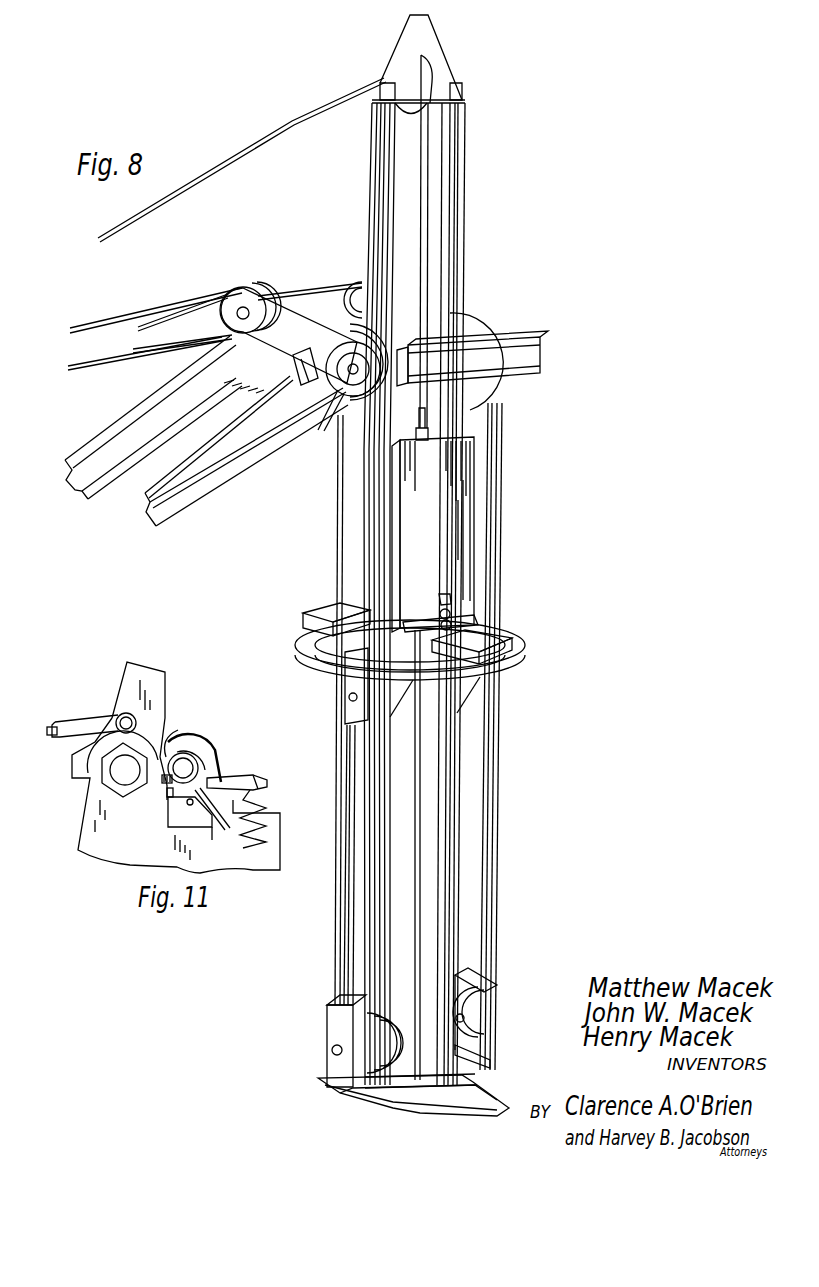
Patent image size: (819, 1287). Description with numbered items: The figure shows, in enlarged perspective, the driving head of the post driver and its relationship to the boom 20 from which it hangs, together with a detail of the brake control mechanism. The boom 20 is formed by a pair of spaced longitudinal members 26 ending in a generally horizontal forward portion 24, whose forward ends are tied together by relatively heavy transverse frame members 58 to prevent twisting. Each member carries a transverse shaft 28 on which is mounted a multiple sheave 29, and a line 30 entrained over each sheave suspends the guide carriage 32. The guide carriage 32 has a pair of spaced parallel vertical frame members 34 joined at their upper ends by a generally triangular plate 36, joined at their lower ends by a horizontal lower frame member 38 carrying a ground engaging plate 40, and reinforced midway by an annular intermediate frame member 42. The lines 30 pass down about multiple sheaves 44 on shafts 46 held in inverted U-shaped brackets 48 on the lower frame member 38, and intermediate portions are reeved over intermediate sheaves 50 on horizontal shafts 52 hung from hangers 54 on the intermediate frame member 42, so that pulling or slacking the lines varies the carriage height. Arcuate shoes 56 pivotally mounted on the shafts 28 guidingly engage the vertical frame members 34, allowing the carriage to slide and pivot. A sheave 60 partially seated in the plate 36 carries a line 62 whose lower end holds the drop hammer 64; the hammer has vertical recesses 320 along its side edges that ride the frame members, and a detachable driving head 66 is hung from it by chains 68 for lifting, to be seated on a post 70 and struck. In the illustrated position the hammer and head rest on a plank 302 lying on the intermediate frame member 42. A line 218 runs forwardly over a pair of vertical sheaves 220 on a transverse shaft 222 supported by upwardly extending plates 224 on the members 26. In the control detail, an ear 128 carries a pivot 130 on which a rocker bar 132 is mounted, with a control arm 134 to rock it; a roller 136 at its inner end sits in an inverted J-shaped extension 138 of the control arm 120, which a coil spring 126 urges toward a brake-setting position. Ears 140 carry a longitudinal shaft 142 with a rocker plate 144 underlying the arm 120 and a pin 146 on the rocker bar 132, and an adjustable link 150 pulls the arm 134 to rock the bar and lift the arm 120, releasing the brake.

In FIG. 8, the boom 20 is at (202, 375).
In FIG. 8, the horizontal forward portion 24 is at (299, 386).
In FIG. 8, the longitudinal members 26 is at (112, 435).
In FIG. 8, the transverse shaft 28 is at (341, 393).
In FIG. 8, the multiple sheave 29 is at (400, 380).
In FIG. 8, the line 30 is at (239, 416).
In FIG. 8, the guide carriage 32 is at (434, 649).
In FIG. 8, the vertical frame members 34 is at (420, 594).
In FIG. 8, the triangular plate 36 is at (447, 86).
In FIG. 8, the horizontal lower frame member 38 is at (490, 1068).
In FIG. 8, the ground engaging plate 40 is at (437, 1108).
In FIG. 8, the annular intermediate frame member 42 is at (522, 634).
In FIG. 8, the multiple sheaves 44 is at (360, 1038).
In FIG. 8, the shafts 46 is at (332, 1053).
In FIG. 8, the inverted U-shaped brackets 48 is at (328, 1011).
In FIG. 8, the intermediate sheaves 50 is at (393, 722).
In FIG. 8, the horizontal shafts 52 is at (347, 697).
In FIG. 8, the hangers 54 is at (345, 709).
In FIG. 8, the arcuate cross-sectional shoes 56 is at (470, 327).
In FIG. 8, the transverse frame members 58 is at (515, 360).
In FIG. 8, the sheave 60 is at (411, 118).
In FIG. 8, the line 62 is at (317, 110).
In FIG. 8, the drop hammer 64 is at (470, 534).
In FIG. 8, the detachable driving head 66 is at (470, 632).
In FIG. 8, the chains 68 is at (440, 606).
In FIG. 8, the post 70 is at (441, 823).
In FIG. 11, the control arm 120 is at (273, 772).
In FIG. 11, the coil spring 126 is at (238, 845).
In FIG. 11, the ear 128 is at (92, 850).
In FIG. 11, the pivot 130 is at (123, 773).
In FIG. 11, the rocker bar 132 is at (168, 753).
In FIG. 11, the control arm 134 is at (150, 670).
In FIG. 11, the roller 136 is at (200, 765).
In FIG. 11, the inverted J-shaped extension 138 is at (217, 737).
In FIG. 11, the ears 140 is at (185, 822).
In FIG. 11, the longitudinal shaft 142 is at (187, 803).
In FIG. 11, the rocker plate 144 is at (216, 819).
In FIG. 11, the pin 146 is at (168, 795).
In FIG. 11, the adjustable link 150 is at (52, 723).
In FIG. 8, the line 218 is at (153, 310).
In FIG. 8, the vertical sheaves 220 is at (254, 302).
In FIG. 8, the transverse shaft 222 is at (313, 300).
In FIG. 8, the upwardly extending plates 224 is at (259, 326).
In FIG. 8, the plank 302 is at (520, 652).
In FIG. 8, the recesses 320 is at (395, 530).